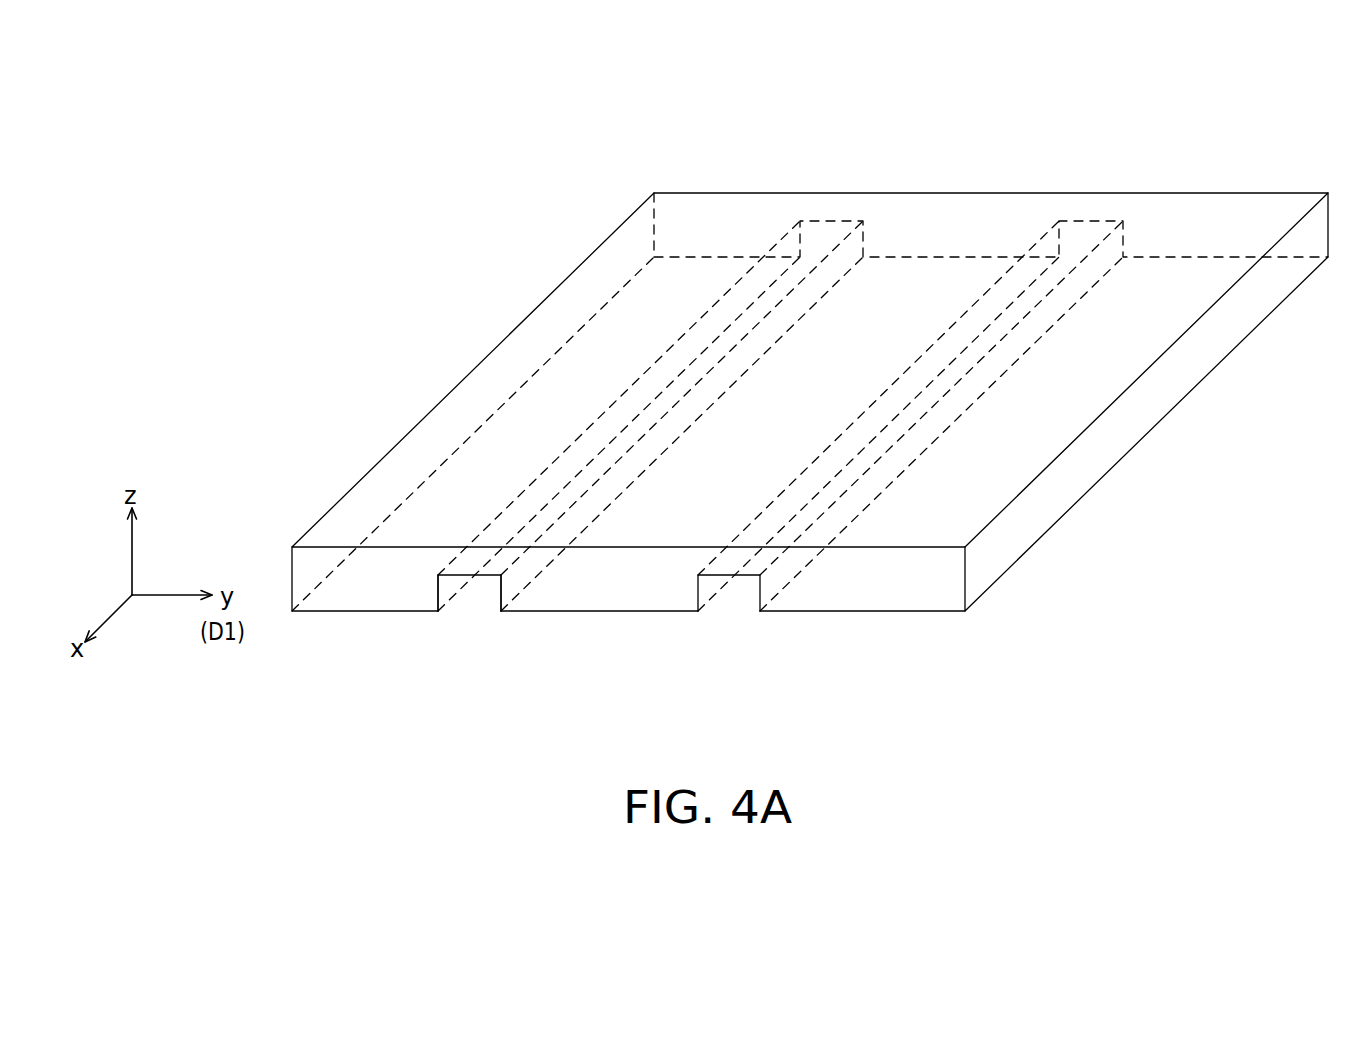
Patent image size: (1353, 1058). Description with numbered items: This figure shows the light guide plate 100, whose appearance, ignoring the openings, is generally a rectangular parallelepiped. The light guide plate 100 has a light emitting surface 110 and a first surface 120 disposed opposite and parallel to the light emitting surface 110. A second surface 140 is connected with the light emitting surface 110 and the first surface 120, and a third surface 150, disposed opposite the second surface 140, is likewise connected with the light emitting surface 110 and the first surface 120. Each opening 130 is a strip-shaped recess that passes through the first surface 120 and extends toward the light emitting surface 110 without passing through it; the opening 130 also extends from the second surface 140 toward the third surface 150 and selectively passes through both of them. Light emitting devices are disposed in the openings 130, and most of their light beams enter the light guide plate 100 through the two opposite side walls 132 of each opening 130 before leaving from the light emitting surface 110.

The light guide plate 100 is at (1065, 678).
The light emitting surface 110 is at (392, 492).
The first surface 120 is at (376, 611).
The opening 130 is at (467, 604).
The side walls 132 is at (440, 598).
The second surface 140 is at (630, 584).
The third surface 150 is at (946, 228).